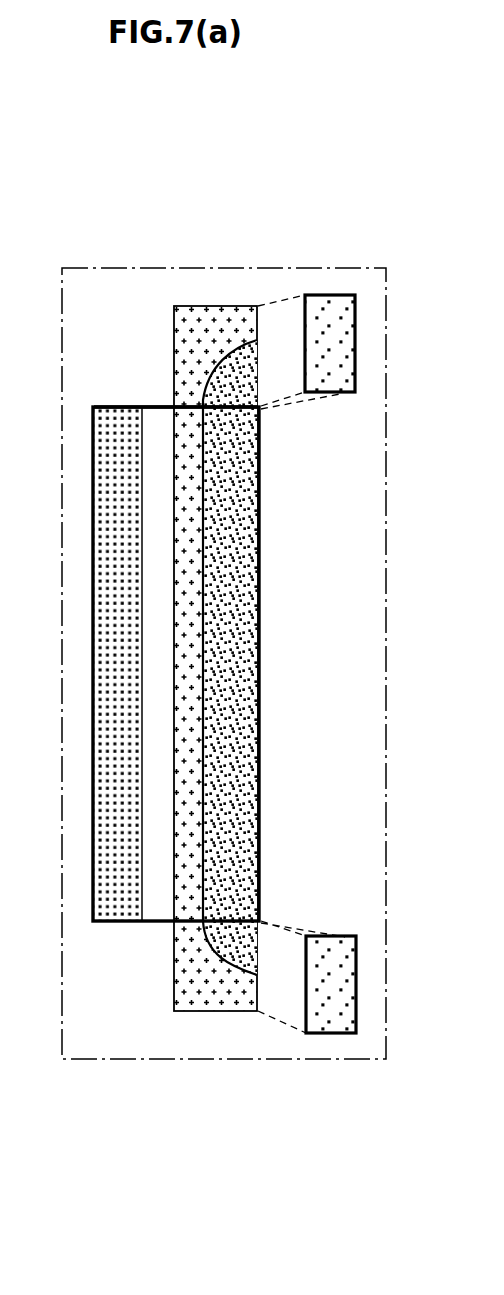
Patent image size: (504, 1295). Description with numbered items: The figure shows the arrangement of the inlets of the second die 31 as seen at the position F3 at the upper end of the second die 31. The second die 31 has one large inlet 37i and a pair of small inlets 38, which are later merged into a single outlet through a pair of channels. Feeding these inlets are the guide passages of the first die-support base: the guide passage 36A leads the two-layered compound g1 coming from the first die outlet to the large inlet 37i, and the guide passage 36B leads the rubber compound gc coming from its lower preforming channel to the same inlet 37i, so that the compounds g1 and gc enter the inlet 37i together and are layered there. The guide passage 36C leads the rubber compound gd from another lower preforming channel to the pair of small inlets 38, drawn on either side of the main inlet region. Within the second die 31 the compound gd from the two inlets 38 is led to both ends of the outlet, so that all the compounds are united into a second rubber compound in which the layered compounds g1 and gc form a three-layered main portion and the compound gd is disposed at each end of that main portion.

The second die 31 is at (362, 268).
The inlet 37i is at (120, 407).
The inlets 38 is at (286, 660).
The guide passage 36A is at (192, 306).
The guide passage 36B is at (143, 830).
The guide passage 36C is at (372, 658).
The rubber compound gd is at (328, 313).
The rubber compound gc is at (107, 873).
The two-layered compound g1 is at (203, 988).
The position F3 is at (71, 234).